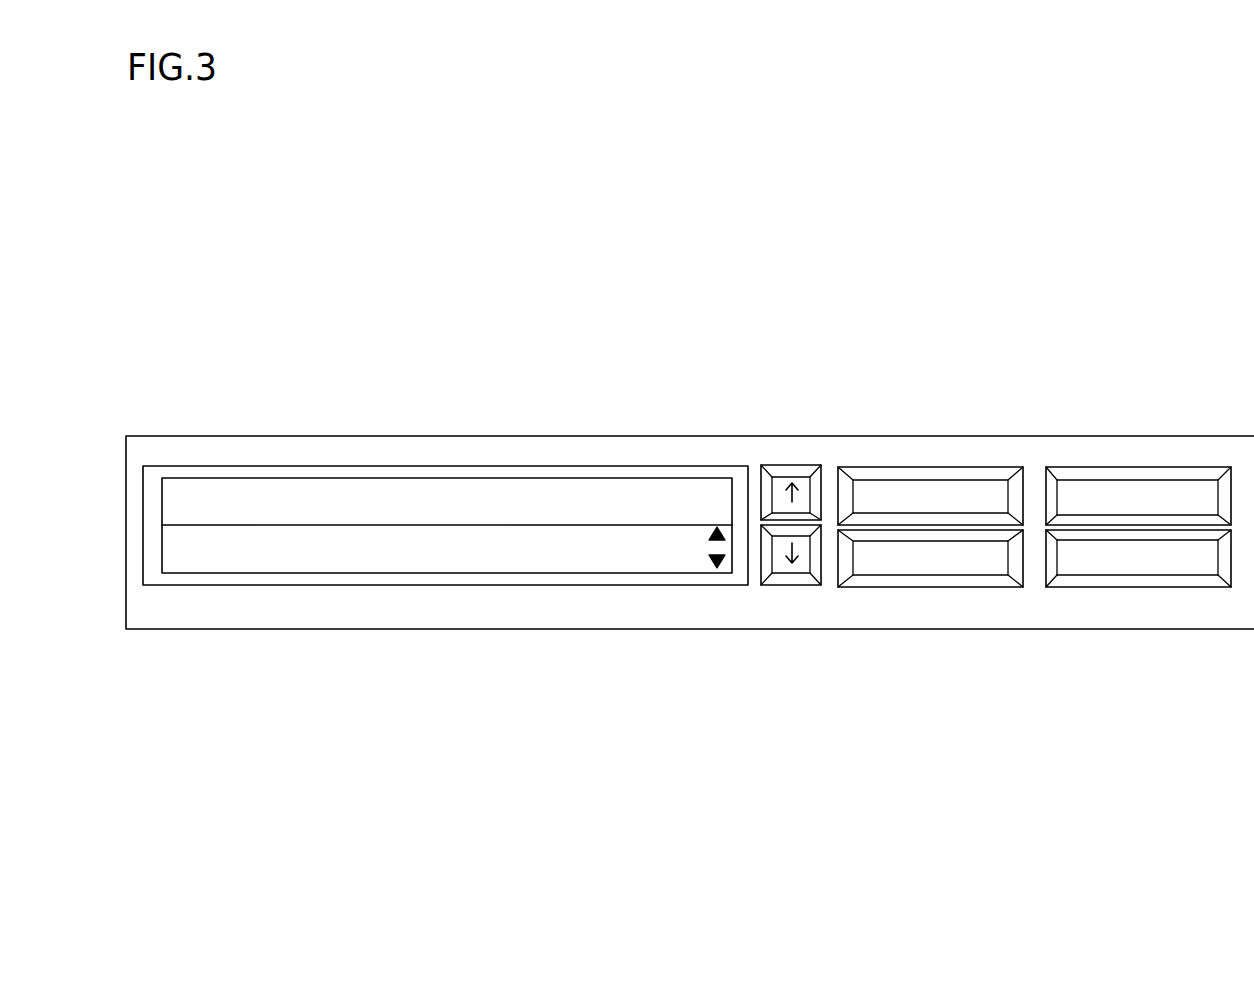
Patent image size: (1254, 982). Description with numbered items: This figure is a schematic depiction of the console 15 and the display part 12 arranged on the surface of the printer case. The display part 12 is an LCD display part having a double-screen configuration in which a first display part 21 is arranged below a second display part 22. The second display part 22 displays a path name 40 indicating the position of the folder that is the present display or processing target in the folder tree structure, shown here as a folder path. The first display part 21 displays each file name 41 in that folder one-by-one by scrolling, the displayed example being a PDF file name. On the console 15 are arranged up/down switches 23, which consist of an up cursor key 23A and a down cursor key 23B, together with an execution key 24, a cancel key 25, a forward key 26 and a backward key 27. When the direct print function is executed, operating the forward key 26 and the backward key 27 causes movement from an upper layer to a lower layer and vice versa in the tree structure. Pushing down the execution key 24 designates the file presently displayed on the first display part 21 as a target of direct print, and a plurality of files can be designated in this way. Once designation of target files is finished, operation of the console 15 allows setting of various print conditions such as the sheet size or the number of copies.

The display part 12 is at (447, 611).
The console 15 is at (1046, 354).
The first display part 21 is at (447, 630).
The second display part 22 is at (508, 498).
The up/down switches 23 is at (739, 452).
The up cursor key 23A is at (778, 492).
The down cursor key 23B is at (778, 547).
The execution key 24 is at (997, 484).
The cancel key 25 is at (980, 568).
The forward key 26 is at (1093, 483).
The backward key 27 is at (1083, 568).
The path name 40 is at (436, 531).
The file name 41 is at (296, 566).